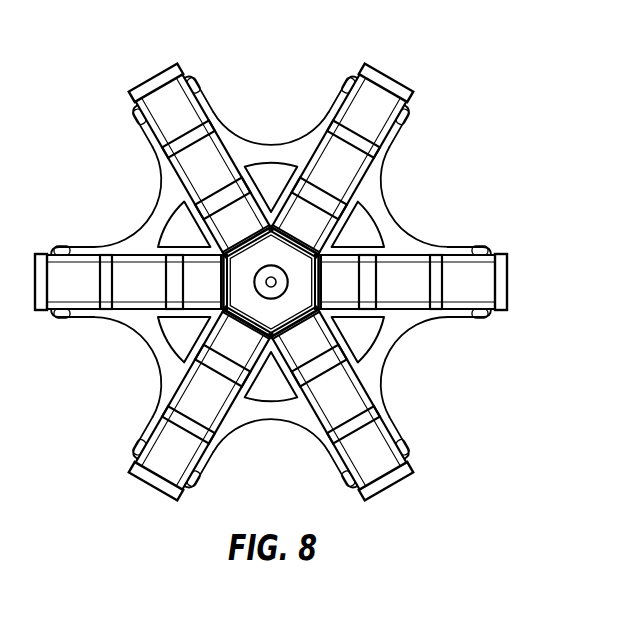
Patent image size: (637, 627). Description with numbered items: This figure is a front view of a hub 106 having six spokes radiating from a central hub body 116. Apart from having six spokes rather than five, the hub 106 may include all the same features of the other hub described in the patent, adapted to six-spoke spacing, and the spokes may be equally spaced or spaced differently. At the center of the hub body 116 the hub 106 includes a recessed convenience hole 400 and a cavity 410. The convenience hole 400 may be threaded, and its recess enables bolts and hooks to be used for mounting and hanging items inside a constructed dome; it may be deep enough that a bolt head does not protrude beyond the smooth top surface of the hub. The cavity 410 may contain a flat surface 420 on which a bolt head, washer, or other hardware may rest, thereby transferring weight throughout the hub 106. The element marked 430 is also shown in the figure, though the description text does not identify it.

The hub 106 is at (446, 58).
The hub body 116 is at (295, 265).
The recessed convenience hole 400 is at (255, 282).
The cavity 410 is at (306, 282).
The flat surface 420 is at (282, 289).
The hub flange edge 430 is at (265, 309).